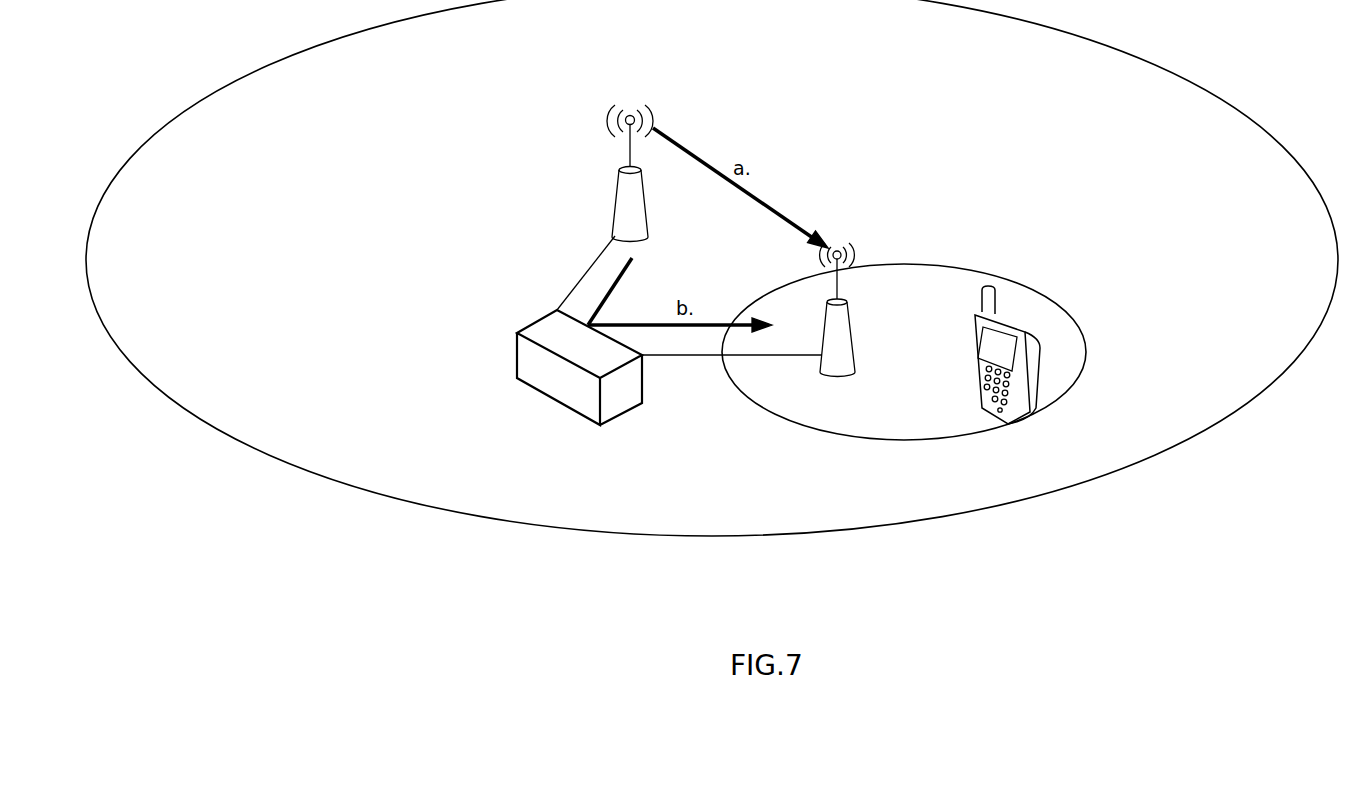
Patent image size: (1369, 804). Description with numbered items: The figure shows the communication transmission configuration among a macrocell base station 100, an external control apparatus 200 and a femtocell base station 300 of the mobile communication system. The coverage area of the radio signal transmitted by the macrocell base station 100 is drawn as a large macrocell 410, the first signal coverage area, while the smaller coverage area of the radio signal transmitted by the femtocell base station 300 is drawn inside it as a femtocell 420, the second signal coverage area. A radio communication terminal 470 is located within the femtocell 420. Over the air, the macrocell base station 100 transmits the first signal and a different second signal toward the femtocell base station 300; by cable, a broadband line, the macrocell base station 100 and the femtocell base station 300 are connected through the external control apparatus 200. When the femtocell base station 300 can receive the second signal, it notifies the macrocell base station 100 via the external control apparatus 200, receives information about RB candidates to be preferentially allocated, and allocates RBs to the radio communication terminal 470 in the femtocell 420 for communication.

The macrocell base station 100 is at (617, 199).
The external control apparatus 200 is at (527, 400).
The femtocell base station 300 is at (828, 378).
The macrocell 410 is at (1190, 85).
The femtocell 420 is at (1052, 303).
The radio communication terminal 470 is at (1020, 427).